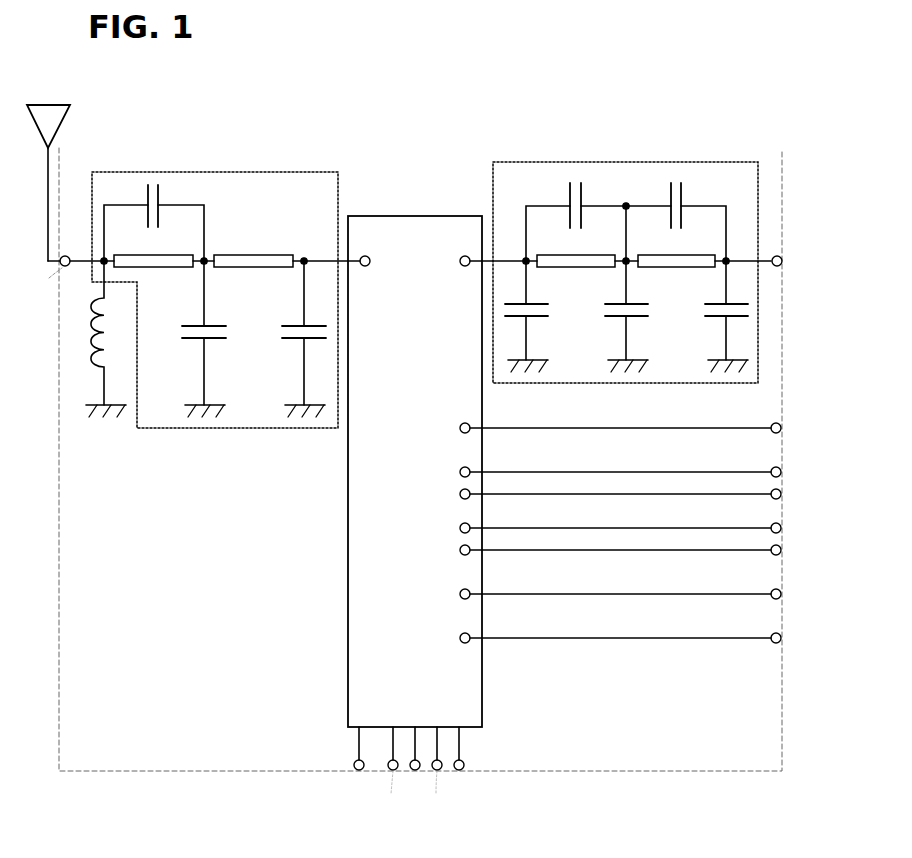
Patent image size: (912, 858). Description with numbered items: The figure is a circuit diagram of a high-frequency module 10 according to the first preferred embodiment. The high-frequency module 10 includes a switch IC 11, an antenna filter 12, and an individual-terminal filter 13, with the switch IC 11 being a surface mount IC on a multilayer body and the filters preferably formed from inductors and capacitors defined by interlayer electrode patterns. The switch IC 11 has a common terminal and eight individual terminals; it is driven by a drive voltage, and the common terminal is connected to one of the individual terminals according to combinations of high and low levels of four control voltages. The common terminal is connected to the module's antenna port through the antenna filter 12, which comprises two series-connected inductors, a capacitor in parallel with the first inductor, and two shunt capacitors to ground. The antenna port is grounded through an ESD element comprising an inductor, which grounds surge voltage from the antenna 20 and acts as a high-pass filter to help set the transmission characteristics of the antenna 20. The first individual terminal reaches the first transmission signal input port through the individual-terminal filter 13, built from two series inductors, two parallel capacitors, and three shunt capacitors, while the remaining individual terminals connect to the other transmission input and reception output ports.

The high-frequency module 10 is at (738, 151).
The switch IC 11 is at (448, 221).
The antenna filter 12 is at (339, 195).
The individual-terminal filter 13 is at (759, 182).
The antenna 20 is at (66, 106).